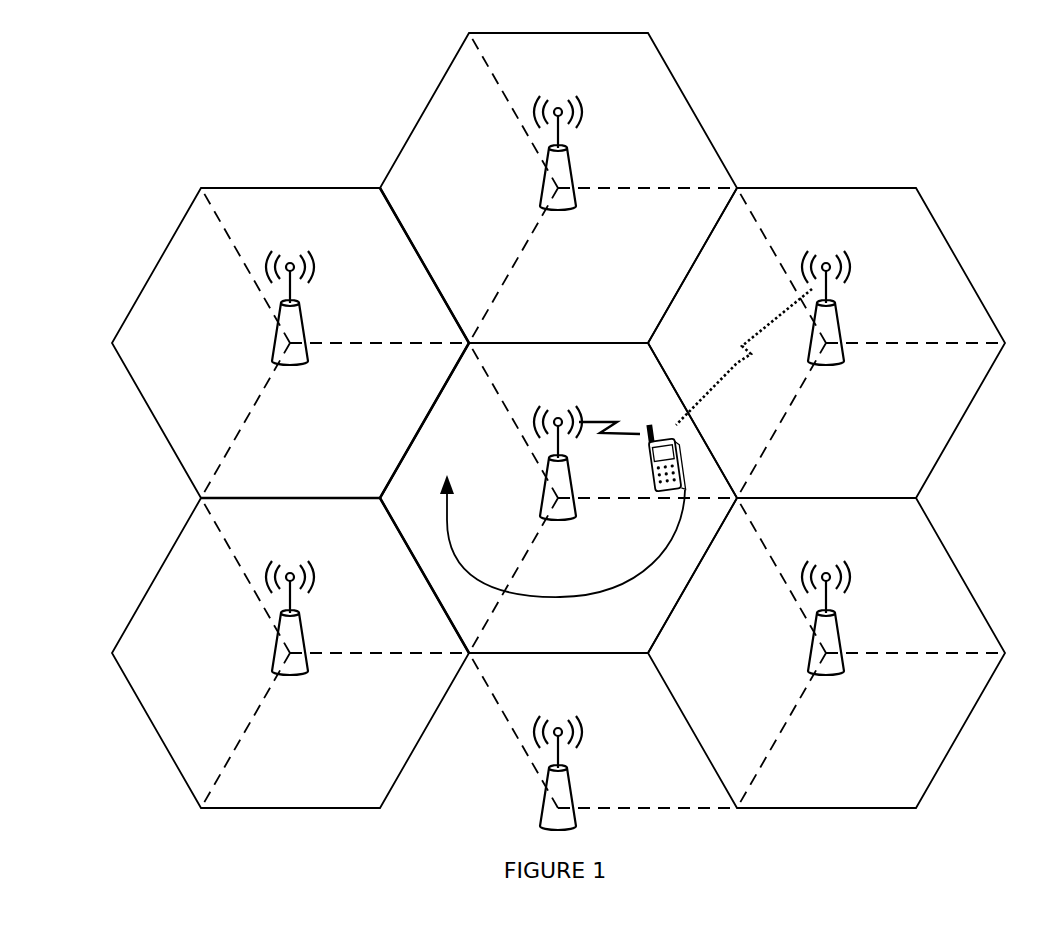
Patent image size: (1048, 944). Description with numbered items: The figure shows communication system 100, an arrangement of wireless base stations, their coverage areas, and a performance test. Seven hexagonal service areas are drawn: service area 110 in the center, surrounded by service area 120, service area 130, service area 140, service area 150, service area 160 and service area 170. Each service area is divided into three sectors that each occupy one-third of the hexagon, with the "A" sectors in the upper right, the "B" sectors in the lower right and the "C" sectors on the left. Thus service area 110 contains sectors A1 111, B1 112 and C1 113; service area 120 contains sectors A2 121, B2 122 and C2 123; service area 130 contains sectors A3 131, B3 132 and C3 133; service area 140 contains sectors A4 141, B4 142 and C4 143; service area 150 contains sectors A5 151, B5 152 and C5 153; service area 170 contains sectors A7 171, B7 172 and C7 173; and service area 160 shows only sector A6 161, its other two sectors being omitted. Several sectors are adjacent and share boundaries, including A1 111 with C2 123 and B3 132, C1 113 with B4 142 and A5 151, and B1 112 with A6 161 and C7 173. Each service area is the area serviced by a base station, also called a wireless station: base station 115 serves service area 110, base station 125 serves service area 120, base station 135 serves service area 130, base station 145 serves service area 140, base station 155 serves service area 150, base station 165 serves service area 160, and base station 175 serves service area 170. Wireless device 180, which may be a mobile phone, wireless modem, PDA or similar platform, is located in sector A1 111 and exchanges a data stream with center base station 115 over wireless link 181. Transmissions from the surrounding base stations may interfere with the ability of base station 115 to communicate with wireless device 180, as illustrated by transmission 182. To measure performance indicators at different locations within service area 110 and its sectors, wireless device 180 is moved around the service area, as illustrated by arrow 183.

The communication system 100 is at (136, 106).
The service area 110 is at (497, 645).
The sector A1 111 is at (609, 398).
The sector B1 112 is at (609, 641).
The sector C1 113 is at (396, 519).
The base station 115 is at (545, 518).
The service area 120 is at (984, 360).
The sector A2 121 is at (878, 243).
The sector B2 122 is at (871, 489).
The sector C2 123 is at (664, 367).
The base station 125 is at (810, 361).
The service area 130 is at (689, 122).
The sector A3 131 is at (611, 88).
The sector B3 132 is at (609, 336).
The sector C3 133 is at (396, 211).
The base station 135 is at (541, 206).
The service area 140 is at (157, 272).
The sector A4 141 is at (343, 241).
The sector B4 142 is at (333, 491).
The sector C4 143 is at (126, 366).
The base station 145 is at (270, 363).
The service area 150 is at (193, 782).
The sector A5 151 is at (341, 553).
The sector B5 152 is at (334, 801).
The sector C5 153 is at (128, 678).
The base station 155 is at (273, 672).
The service area 160 is at (670, 808).
The sector A6 161 is at (611, 709).
The base station 165 is at (550, 816).
The service area 170 is at (781, 803).
The sector A7 171 is at (878, 553).
The sector B7 172 is at (871, 800).
The sector C7 173 is at (664, 678).
The base station 175 is at (808, 672).
The wireless device 180 is at (650, 478).
The wireless link 181 is at (588, 410).
The transmission 182 is at (770, 327).
The arrow 183 is at (675, 550).